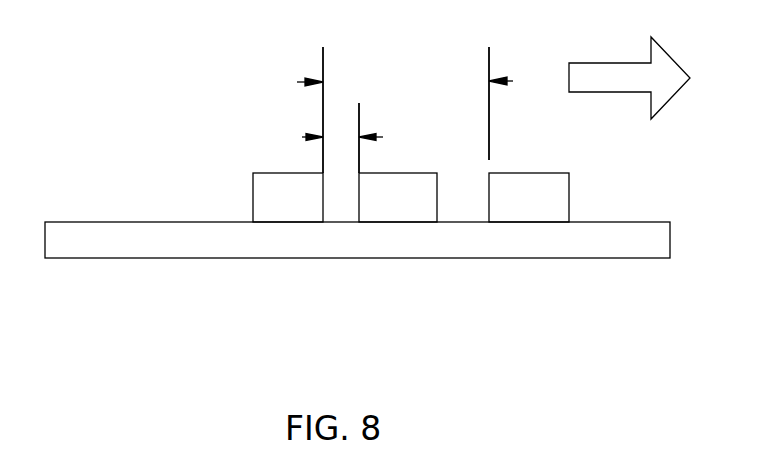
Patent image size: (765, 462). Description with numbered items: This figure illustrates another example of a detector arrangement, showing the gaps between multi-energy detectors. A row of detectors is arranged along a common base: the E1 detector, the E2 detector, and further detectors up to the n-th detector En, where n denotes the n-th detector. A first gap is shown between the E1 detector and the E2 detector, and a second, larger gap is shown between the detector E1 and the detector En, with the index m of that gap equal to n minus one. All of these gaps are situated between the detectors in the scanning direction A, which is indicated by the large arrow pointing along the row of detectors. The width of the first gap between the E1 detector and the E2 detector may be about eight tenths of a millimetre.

The E1 detector E1 is at (288, 197).
The E2 detector E2 is at (398, 197).
The detector En is at (529, 197).
The scanning direction A is at (629, 78).